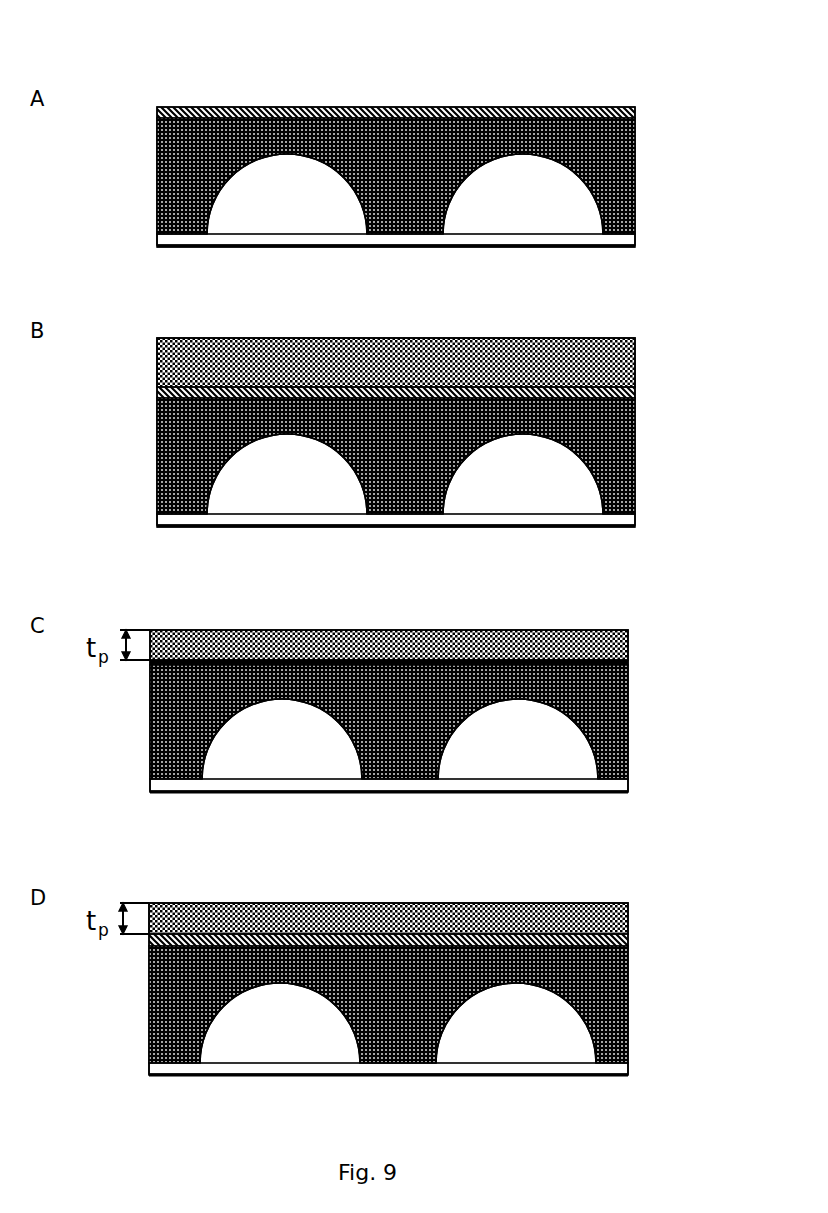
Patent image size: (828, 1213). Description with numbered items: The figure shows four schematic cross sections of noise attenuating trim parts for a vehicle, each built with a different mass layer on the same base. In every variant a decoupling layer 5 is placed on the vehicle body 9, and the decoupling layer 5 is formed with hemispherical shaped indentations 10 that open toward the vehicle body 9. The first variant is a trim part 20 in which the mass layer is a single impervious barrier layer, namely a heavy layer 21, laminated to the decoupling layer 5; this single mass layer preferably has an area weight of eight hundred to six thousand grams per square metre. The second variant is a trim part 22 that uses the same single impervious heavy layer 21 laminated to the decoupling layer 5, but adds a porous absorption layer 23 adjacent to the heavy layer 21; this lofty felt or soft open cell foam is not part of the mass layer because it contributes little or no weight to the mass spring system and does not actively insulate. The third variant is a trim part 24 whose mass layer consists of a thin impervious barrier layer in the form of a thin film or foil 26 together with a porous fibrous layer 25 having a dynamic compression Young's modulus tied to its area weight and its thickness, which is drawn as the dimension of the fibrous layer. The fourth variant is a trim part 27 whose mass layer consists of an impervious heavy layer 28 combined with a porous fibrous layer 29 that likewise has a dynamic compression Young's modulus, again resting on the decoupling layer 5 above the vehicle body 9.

In FIG. 9A, the decoupling layer 5 is at (157, 183).
In FIG. 9B, the decoupling layer 5 is at (157, 463).
In FIG. 9C, the decoupling layer 5 is at (150, 728).
In FIG. 9D, the decoupling layer 5 is at (149, 1012).
In FIG. 9A, the vehicle body 9 is at (175, 241).
In FIG. 9B, the vehicle body 9 is at (177, 520).
In FIG. 9C, the vehicle body 9 is at (170, 788).
In FIG. 9D, the vehicle body 9 is at (170, 1071).
In FIG. 9A, the hemispherical shaped indentations 10 is at (308, 220).
In FIG. 9B, the hemispherical shaped indentations 10 is at (308, 500).
In FIG. 9C, the hemispherical shaped indentations 10 is at (303, 766).
In FIG. 9D, the hemispherical shaped indentations 10 is at (301, 1049).
In FIG. 9A, the trim part 20 is at (486, 96).
In FIG. 9A, the heavy layer 21 is at (635, 107).
In FIG. 9B, the heavy layer 21 is at (635, 389).
In FIG. 9B, the trim part 22 is at (620, 330).
In FIG. 9B, the porous absorption layer 23 is at (635, 363).
In FIG. 9C, the trim part 24 is at (570, 620).
In FIG. 9C, the porous fibrous layer 25 is at (628, 645).
In FIG. 9C, the thin film or foil 26 is at (628, 664).
In FIG. 9D, the trim part 27 is at (560, 890).
In FIG. 9D, the heavy layer 28 is at (628, 943).
In FIG. 9D, the porous fibrous layer 29 is at (628, 920).